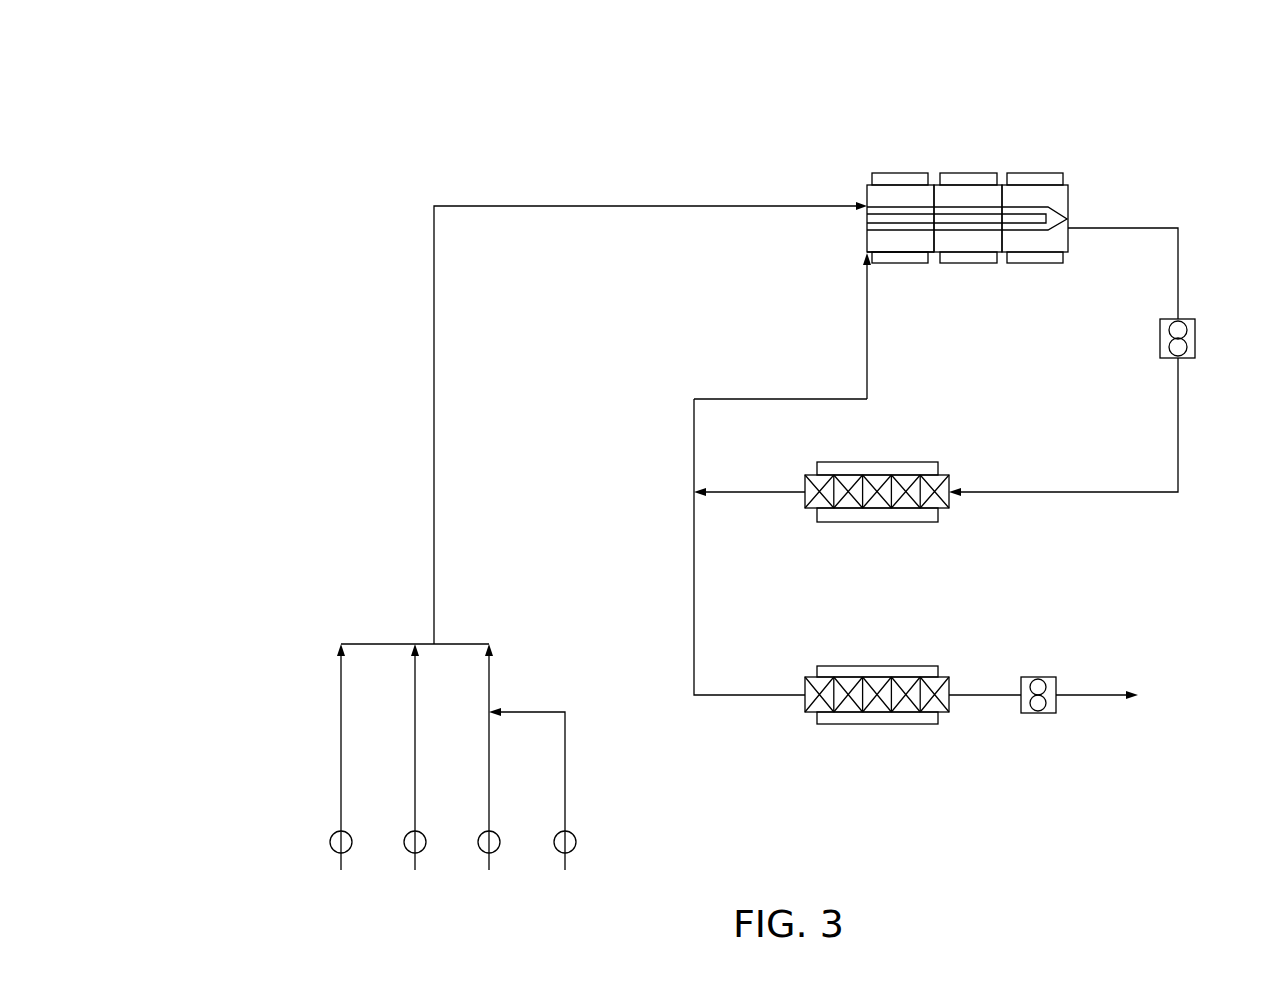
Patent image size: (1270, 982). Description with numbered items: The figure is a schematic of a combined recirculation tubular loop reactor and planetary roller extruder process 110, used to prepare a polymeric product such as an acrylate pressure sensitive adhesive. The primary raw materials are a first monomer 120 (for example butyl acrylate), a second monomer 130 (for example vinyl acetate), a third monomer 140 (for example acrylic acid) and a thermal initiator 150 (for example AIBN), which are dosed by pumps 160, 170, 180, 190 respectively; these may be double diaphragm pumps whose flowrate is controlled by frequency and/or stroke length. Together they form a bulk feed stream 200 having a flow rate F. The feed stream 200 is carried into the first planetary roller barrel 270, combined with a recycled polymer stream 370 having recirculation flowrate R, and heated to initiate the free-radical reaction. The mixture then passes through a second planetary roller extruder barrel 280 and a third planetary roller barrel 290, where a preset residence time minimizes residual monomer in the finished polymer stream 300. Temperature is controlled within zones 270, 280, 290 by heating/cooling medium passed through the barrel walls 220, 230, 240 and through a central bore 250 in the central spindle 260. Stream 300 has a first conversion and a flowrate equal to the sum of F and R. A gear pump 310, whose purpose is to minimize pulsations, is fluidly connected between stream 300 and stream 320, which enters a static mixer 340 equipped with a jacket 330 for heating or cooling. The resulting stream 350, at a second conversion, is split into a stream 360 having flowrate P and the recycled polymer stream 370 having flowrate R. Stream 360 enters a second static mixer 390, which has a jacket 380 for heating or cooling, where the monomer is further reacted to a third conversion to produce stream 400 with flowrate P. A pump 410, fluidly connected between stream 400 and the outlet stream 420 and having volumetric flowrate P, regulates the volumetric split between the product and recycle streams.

The process 110 is at (366, 174).
The first monomer 120 is at (489, 742).
The second monomer 130 is at (415, 710).
The third monomer 140 is at (341, 742).
The thermal initiator 150 is at (565, 775).
The pump 160 is at (500, 835).
The pump 170 is at (426, 835).
The pump 180 is at (352, 835).
The pump 190 is at (577, 835).
The bulk feed stream 200 is at (434, 450).
The barrel wall 220 is at (907, 263).
The barrel wall 230 is at (970, 263).
The barrel wall 240 is at (1050, 263).
The central bore 250 is at (905, 203).
The central spindle 260 is at (1018, 225).
The first planetary roller barrel 270 is at (925, 243).
The second planetary roller extruder barrel 280 is at (965, 193).
The third planetary roller barrel 290 is at (1025, 243).
The finished polymer stream 300 is at (1125, 228).
The gear pump 310 is at (1195, 338).
The stream 320 is at (1105, 492).
The jacket 330 is at (880, 522).
The static mixer 340 is at (912, 462).
The stream 350 is at (763, 492).
The stream 360 is at (694, 538).
The recycled polymer stream 370 is at (790, 399).
The jacket 380 is at (905, 724).
The static mixer 390 is at (885, 666).
The stream 400 is at (985, 695).
The pump 410 is at (1038, 677).
The stream 420 is at (1090, 695).